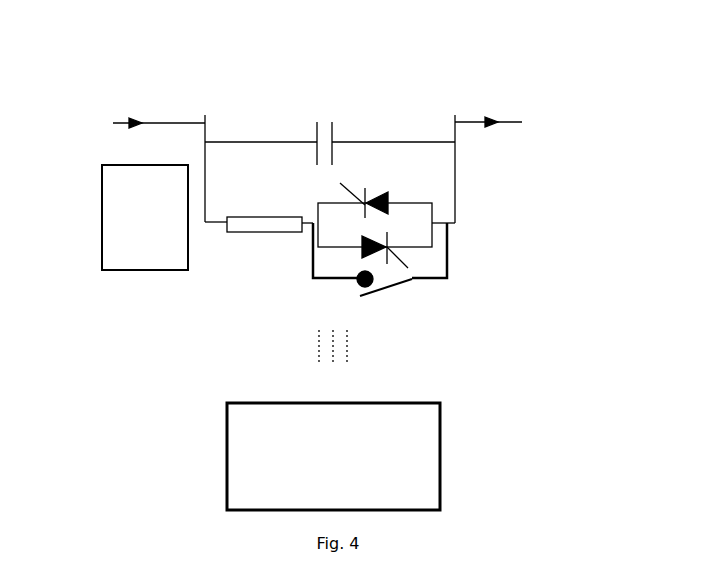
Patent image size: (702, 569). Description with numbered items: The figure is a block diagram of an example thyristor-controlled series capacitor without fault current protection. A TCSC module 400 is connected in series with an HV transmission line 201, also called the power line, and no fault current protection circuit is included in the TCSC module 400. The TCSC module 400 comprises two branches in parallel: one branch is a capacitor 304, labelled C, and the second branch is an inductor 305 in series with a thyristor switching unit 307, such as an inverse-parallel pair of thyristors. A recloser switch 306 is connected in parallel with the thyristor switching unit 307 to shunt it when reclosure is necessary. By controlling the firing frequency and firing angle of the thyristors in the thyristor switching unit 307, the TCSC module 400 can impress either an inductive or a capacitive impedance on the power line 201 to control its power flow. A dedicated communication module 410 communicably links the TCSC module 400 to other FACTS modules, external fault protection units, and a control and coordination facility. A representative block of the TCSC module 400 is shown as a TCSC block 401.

The TCSC module 400 is at (228, 72).
The HV transmission line 201 is at (137, 120).
The capacitor 304 is at (327, 120).
The inductor 305 is at (265, 232).
The recloser switch 306 is at (358, 282).
The thyristor switching unit 307 is at (397, 230).
The communication module 410 is at (102, 230).
The TCSC block 401 is at (398, 402).